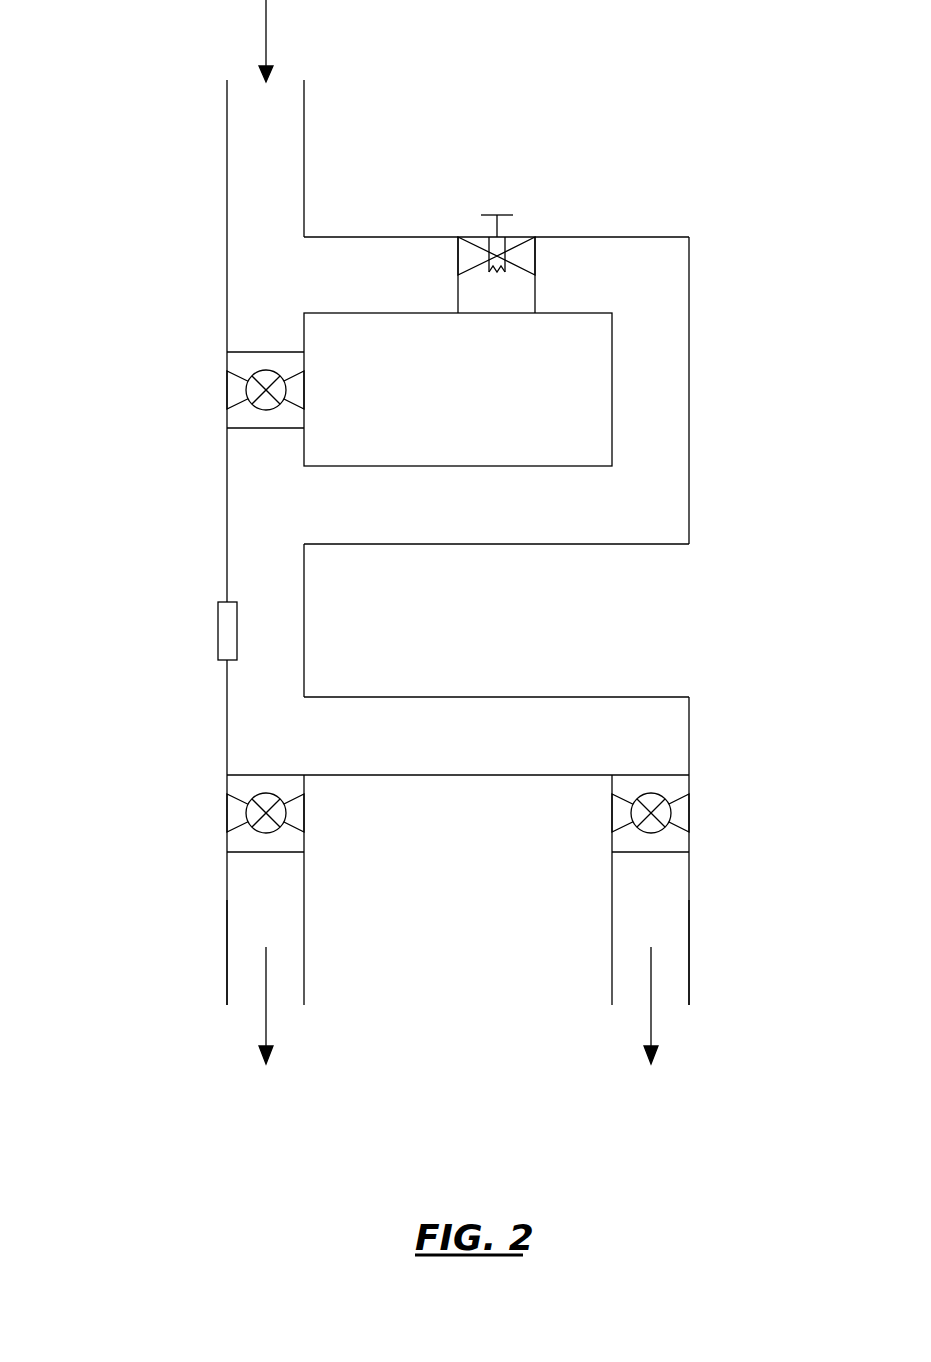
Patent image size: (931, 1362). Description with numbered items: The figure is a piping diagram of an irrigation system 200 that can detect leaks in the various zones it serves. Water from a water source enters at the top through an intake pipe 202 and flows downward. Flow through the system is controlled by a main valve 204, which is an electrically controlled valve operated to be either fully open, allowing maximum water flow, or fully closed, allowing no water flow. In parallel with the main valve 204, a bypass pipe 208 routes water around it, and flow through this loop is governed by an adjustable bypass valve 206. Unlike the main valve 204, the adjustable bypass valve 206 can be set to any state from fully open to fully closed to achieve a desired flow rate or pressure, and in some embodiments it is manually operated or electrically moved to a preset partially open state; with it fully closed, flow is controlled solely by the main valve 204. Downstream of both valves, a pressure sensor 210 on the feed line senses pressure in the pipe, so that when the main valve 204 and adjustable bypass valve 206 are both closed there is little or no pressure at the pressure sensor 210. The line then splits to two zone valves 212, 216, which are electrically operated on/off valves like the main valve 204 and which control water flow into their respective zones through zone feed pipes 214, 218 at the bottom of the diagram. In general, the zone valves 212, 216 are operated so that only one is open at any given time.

The irrigation system 200 is at (89, 91).
The intake pipe 202 is at (304, 110).
The main valve 204 is at (227, 385).
The adjustable bypass valve 206 is at (520, 237).
The bypass pipe 208 is at (689, 437).
The pressure sensor 210 is at (218, 620).
The zone valve 212 is at (227, 815).
The zone feed pipe 214 is at (227, 960).
The zone valve 216 is at (689, 815).
The zone feed pipe 218 is at (689, 948).